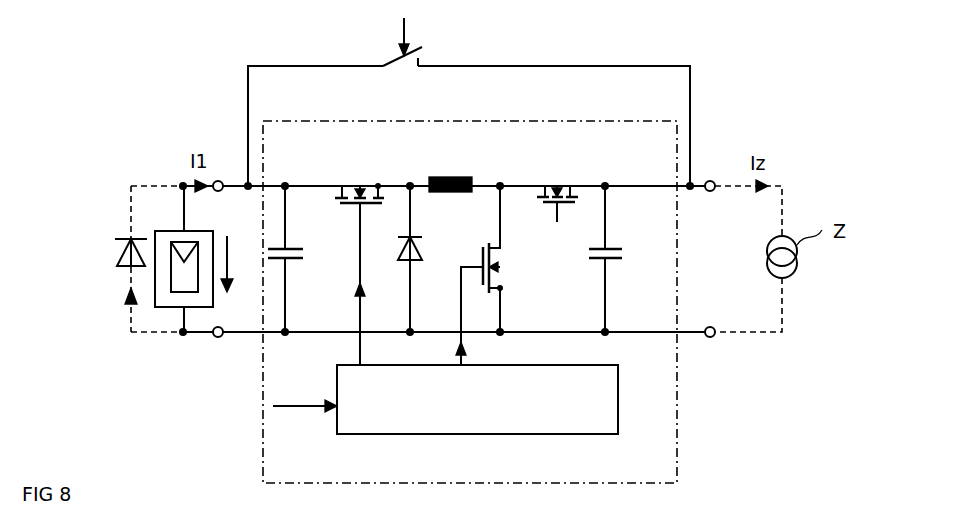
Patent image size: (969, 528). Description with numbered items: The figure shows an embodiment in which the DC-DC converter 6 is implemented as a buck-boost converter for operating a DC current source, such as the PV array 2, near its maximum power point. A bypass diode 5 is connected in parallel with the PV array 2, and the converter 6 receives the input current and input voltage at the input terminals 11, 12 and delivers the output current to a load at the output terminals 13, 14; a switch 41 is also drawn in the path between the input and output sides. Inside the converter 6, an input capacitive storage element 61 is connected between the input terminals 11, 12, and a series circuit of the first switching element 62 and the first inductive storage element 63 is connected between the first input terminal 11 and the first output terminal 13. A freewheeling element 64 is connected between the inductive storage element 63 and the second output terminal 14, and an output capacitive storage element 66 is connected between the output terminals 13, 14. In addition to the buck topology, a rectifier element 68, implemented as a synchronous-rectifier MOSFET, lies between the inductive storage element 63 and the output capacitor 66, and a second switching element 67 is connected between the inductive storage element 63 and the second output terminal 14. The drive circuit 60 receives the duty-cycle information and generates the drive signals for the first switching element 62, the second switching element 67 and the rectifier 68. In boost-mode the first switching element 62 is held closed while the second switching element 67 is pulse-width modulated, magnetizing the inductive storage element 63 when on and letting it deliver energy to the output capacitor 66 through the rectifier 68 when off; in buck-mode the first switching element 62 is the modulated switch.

The PV array 2 is at (171, 230).
The bypass diode 5 is at (124, 234).
The DC-DC converter 6 is at (425, 121).
The first input terminal 11 is at (218, 180).
The second input terminal 12 is at (218, 338).
The first output terminal 13 is at (715, 178).
The second output terminal 14 is at (710, 338).
The switch 41 is at (425, 62).
The drive circuit 60 is at (619, 405).
The input capacitive storage element 61 is at (310, 255).
The first switching element 62 is at (352, 182).
The first inductive storage element 63 is at (445, 177).
The freewheeling element 64 is at (420, 250).
The output capacitive storage element 66 is at (628, 255).
The second switching element 67 is at (510, 270).
The rectifier element 68 is at (553, 175).